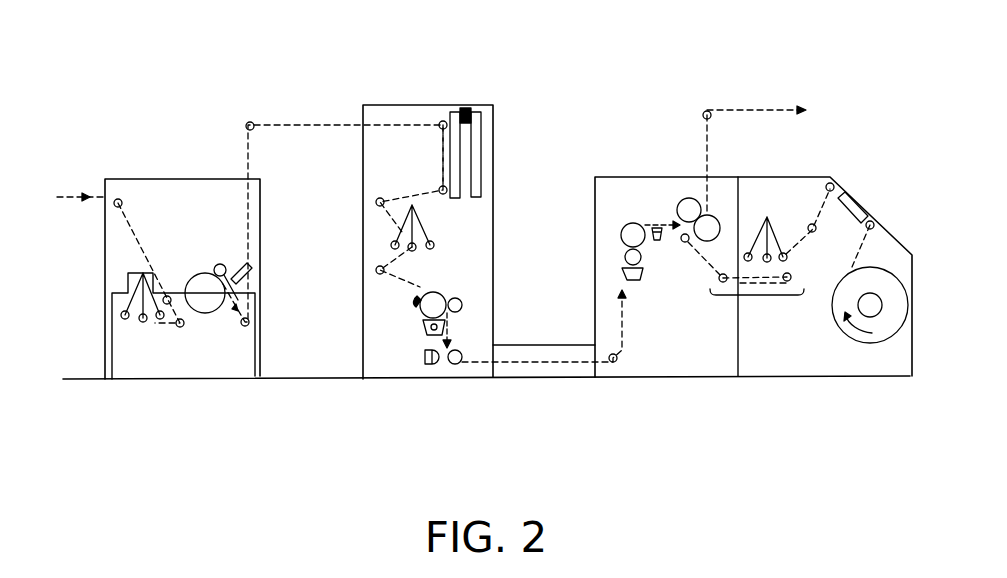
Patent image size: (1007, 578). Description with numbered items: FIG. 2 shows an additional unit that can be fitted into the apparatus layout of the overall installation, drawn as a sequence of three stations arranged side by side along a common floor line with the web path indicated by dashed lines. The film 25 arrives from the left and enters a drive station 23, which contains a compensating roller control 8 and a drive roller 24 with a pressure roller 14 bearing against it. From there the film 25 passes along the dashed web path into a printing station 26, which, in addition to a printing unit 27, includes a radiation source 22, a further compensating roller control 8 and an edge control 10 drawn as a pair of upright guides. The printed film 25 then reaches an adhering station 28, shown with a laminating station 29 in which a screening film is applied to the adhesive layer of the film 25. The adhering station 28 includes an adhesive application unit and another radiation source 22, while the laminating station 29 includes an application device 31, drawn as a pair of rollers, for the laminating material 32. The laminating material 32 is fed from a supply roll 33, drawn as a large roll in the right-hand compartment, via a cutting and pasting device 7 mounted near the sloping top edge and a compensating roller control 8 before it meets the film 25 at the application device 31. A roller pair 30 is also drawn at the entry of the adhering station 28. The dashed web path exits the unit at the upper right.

The cutting and pasting device 7 is at (857, 202).
The compensating roller control 8 is at (150, 332).
The edge control 10 is at (467, 153).
The pressure roller 14 is at (222, 266).
The radiation source 22 is at (420, 362).
The drive station 23 is at (135, 178).
The drive roller 24 is at (196, 275).
The film 25 is at (60, 196).
The printing station 26 is at (403, 100).
The printing unit 27 is at (442, 288).
The adhering station 28 is at (662, 160).
The laminating station 29 is at (757, 297).
The roller pair 30 is at (645, 266).
The application device 31 is at (705, 208).
The laminating material 32 is at (765, 284).
The supply roll 33 is at (883, 335).